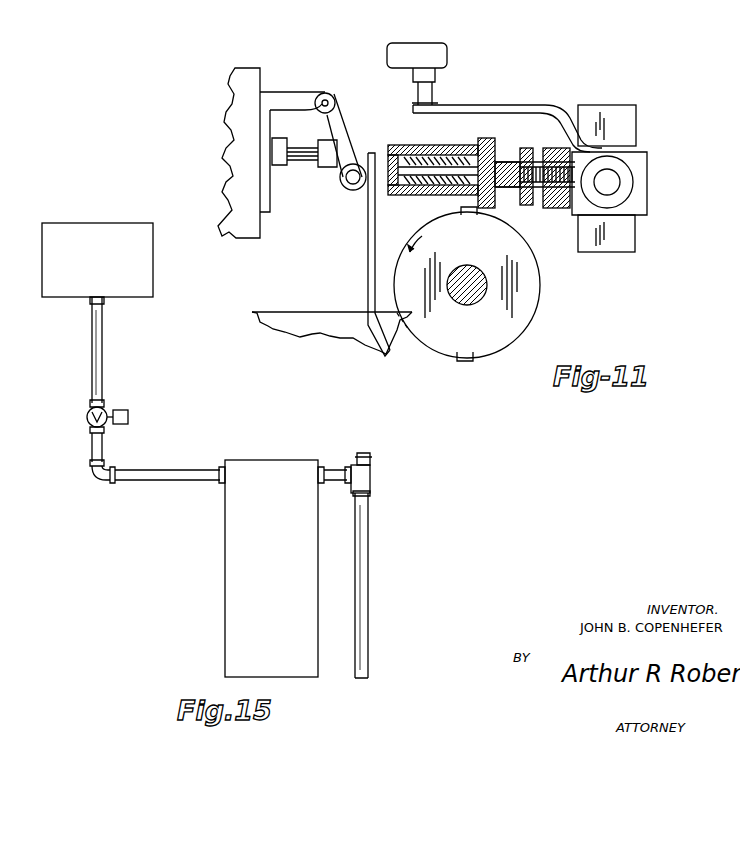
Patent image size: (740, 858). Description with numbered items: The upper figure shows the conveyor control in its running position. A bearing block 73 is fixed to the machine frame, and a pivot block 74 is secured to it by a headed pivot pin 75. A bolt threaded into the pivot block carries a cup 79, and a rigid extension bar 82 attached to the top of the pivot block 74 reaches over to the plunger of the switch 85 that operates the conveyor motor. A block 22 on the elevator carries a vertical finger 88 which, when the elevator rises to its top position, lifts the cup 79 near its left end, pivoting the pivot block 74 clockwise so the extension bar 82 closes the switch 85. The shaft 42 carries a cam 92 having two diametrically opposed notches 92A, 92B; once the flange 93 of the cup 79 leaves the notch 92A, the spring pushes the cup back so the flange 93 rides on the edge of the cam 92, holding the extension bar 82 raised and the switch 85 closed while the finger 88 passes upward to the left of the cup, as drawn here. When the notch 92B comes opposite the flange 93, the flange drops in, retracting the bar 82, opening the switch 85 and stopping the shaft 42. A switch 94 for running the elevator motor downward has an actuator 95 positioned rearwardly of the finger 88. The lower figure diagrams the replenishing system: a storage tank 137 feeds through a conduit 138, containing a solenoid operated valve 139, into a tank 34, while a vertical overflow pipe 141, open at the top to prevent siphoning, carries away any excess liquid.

In FIG. 11, the switch 85 is at (418, 48).
In FIG. 11, the extension bar 82 is at (500, 105).
In FIG. 11, the bearing block 73 is at (634, 128).
In FIG. 11, the headed pivot pin 75 is at (630, 170).
In FIG. 11, the pivot block 74 is at (637, 205).
In FIG. 11, the cup 79 is at (438, 146).
In FIG. 11, the flange 93 is at (495, 142).
In FIG. 11, the actuator 95 is at (342, 182).
In FIG. 11, the switch 94 is at (245, 216).
In FIG. 11, the vertical finger 88 is at (366, 243).
In FIG. 11, the block 22 is at (313, 322).
In FIG. 11, the cam 92 is at (527, 335).
In FIG. 11, the notch 92A is at (464, 222).
In FIG. 11, the notch 92B is at (468, 362).
In FIG. 11, the shaft 42 is at (480, 290).
In FIG. 15, the storage tank 137 is at (145, 268).
In FIG. 15, the conduit 138 is at (103, 348).
In FIG. 15, the solenoid operated valve 139 is at (105, 407).
In FIG. 15, the tank 34 is at (233, 568).
In FIG. 15, the overflow pipe 141 is at (362, 558).